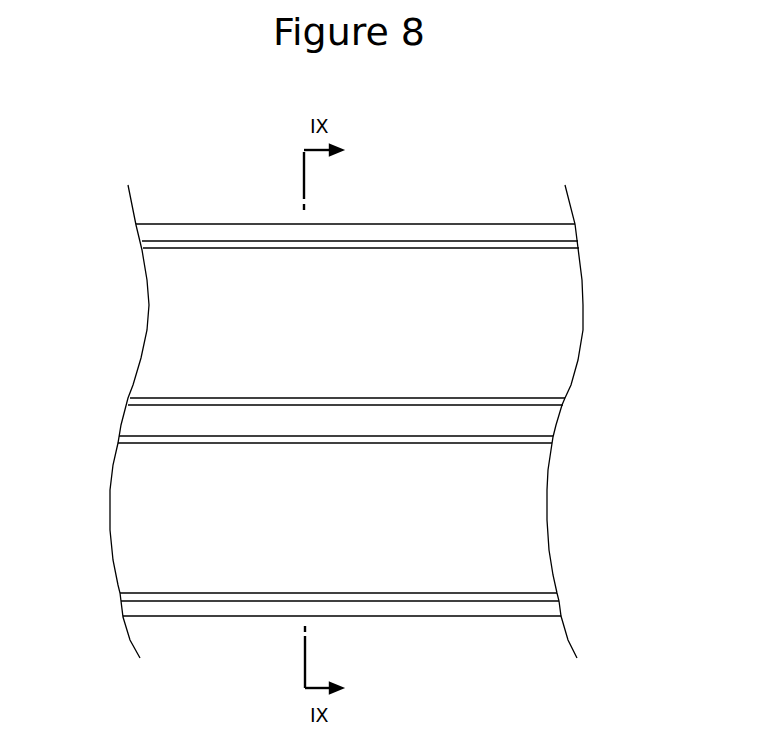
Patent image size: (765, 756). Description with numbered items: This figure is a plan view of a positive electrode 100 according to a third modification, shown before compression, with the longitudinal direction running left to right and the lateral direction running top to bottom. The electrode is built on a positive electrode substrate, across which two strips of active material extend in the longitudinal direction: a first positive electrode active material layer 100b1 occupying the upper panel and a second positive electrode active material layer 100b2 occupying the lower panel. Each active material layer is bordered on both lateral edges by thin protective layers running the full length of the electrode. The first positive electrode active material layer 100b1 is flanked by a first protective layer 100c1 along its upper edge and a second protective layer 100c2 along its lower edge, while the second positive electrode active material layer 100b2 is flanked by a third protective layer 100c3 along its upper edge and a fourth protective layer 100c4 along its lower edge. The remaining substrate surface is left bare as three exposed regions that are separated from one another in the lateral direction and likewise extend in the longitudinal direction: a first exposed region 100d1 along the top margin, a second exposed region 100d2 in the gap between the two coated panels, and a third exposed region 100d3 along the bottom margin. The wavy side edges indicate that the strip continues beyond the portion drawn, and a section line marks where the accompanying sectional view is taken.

The positive electrode 100 is at (436, 125).
The first positive electrode active material layer 100b1 is at (385, 322).
The second positive electrode active material layer 100b2 is at (375, 520).
The first protective layer 100c1 is at (243, 248).
The second protective layer 100c2 is at (450, 400).
The third protective layer 100c3 is at (520, 438).
The fourth protective layer 100c4 is at (453, 597).
The first exposed region 100d1 is at (165, 232).
The second exposed region 100d2 is at (522, 415).
The third exposed region 100d3 is at (225, 607).